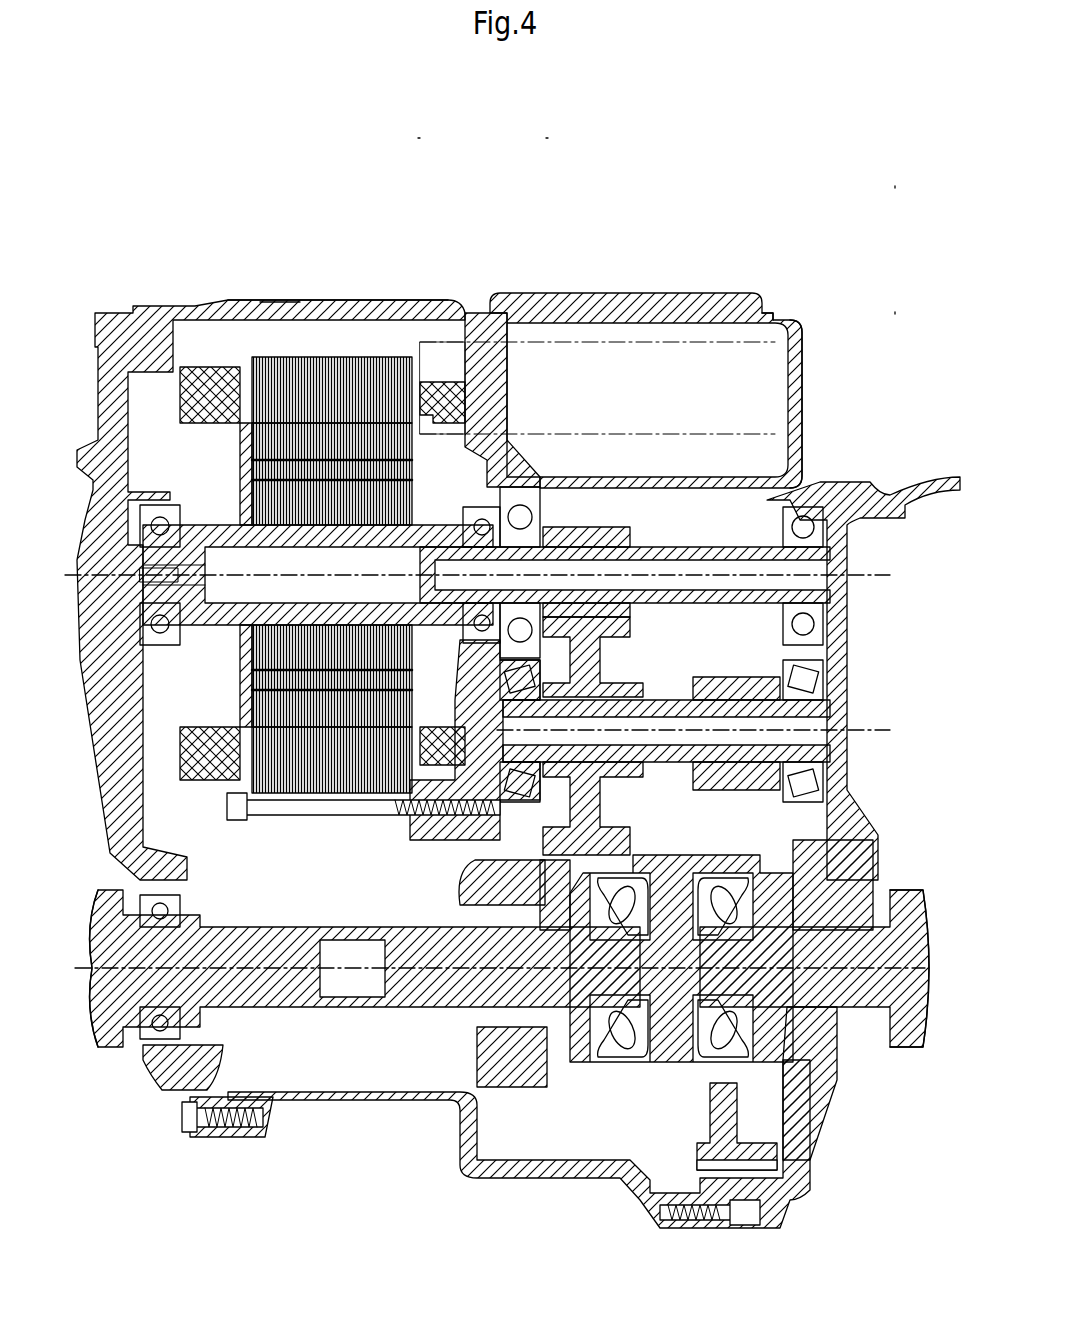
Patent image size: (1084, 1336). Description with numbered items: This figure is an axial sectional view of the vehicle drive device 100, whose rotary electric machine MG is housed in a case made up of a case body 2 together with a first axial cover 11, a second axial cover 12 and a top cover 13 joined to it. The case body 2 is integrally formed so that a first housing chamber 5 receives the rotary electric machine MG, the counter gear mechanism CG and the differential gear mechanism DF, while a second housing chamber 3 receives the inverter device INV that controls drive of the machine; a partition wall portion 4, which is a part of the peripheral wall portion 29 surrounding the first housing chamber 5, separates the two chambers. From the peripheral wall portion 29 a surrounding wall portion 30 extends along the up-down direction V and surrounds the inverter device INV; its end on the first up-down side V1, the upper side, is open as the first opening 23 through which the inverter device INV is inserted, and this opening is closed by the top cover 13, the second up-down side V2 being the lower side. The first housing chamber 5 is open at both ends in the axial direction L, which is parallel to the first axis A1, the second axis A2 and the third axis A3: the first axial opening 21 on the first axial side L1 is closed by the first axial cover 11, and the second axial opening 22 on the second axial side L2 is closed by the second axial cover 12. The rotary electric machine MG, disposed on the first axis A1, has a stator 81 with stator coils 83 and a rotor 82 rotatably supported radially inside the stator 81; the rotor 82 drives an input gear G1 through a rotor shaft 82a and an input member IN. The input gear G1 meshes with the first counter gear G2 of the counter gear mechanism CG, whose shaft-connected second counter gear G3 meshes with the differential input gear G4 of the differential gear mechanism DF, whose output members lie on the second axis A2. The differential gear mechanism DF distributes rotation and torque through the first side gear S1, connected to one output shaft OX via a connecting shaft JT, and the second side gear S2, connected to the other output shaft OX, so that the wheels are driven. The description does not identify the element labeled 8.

The vehicle drive device 100 is at (148, 244).
The first axial cover 11 is at (140, 300).
The second axial cover 12 is at (838, 490).
The top cover 13 is at (762, 318).
The case body 2 is at (315, 300).
The peripheral wall portion 29 is at (287, 300).
The rotary electric machine MG is at (316, 493).
The stator 81 is at (335, 357).
The rotor 82 is at (258, 443).
The rotor shaft 82a is at (312, 535).
The stator coils 83 is at (440, 382).
The inverter device INV is at (652, 323).
The first opening 23 is at (688, 340).
The second housing chamber 3 is at (653, 365).
The partition wall portion 4 is at (503, 370).
The surrounding wall portion 30 is at (803, 373).
The input gear G1 is at (595, 530).
The first counter gear G2 is at (610, 640).
The second counter gear G3 is at (738, 688).
The differential input gear G4 is at (770, 1168).
The input member IN is at (673, 600).
The counter gear mechanism CG is at (720, 729).
The differential gear mechanism DF is at (709, 964).
The bearing support wall 8 is at (473, 690).
The first housing chamber 5 is at (312, 891).
The connecting shaft JT is at (398, 1003).
The output shaft OX is at (115, 1060).
The first side gear S1 is at (600, 1040).
The second side gear S2 is at (700, 1040).
The first axial opening 21 is at (184, 1132).
The second axial opening 22 is at (760, 1208).
The first axis A1 is at (495, 576).
The second axis A2 is at (515, 970).
The third axis A3 is at (714, 731).
The axial direction L is at (420, 138).
The first axial side L1 is at (401, 137).
The second axial side L2 is at (564, 137).
The up-down direction V is at (895, 188).
The first up-down side V1 is at (895, 167).
The second up-down side V2 is at (895, 333).